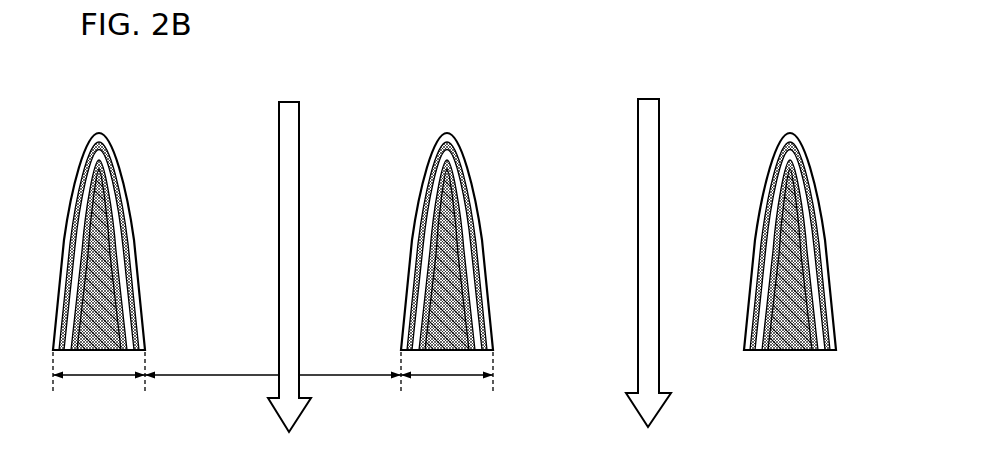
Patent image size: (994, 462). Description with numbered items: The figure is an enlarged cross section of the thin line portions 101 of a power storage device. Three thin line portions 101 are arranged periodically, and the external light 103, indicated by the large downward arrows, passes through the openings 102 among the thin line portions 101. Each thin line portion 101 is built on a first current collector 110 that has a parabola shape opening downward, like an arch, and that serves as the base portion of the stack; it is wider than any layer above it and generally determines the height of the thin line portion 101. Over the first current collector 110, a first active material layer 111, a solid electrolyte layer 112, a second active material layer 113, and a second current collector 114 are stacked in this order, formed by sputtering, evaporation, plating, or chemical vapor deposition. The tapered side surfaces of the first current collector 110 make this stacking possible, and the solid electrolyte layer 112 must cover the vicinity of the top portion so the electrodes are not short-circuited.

The thin line portion 101 is at (273, 379).
The opening 102 is at (273, 361).
The external light 103 is at (290, 150).
The first current collector 110 is at (118, 153).
The first active material layer 111 is at (125, 177).
The solid electrolyte layer 112 is at (133, 200).
The second active material layer 113 is at (137, 230).
The second current collector 114 is at (140, 273).